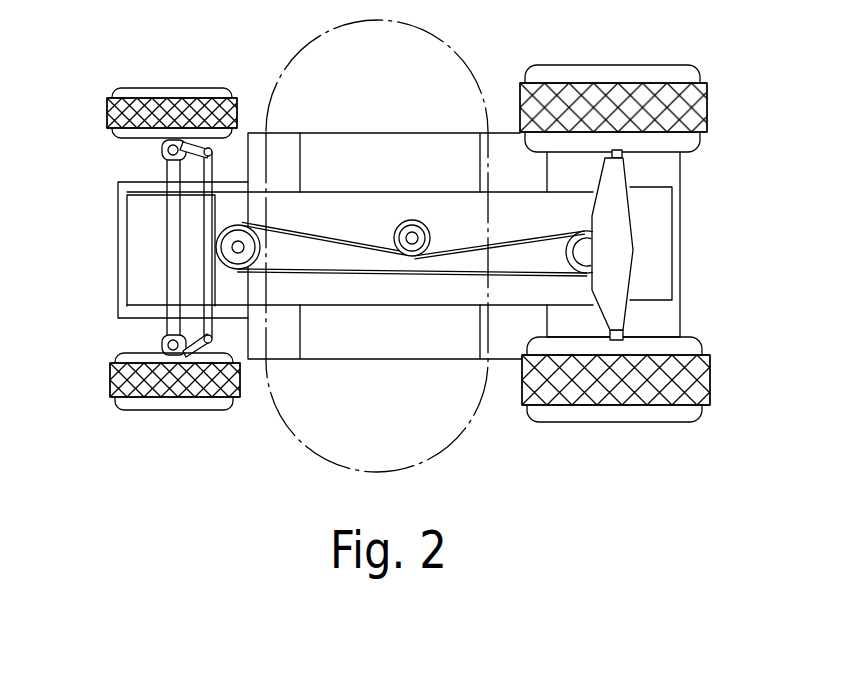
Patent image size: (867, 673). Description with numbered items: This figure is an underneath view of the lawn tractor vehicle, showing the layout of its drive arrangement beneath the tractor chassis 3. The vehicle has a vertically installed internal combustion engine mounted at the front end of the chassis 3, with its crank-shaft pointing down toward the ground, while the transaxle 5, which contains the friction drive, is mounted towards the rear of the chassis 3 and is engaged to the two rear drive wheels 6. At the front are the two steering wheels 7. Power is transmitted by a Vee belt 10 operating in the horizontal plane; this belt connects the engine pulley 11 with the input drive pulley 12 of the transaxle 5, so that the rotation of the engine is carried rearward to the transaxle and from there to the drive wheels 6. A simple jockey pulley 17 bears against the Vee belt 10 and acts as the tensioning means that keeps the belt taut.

The tractor chassis 3 is at (232, 213).
The transaxle 5 is at (615, 250).
The rear drive wheels 6 is at (551, 93).
The front steering wheels 7 is at (162, 100).
The Vee belt 10 is at (343, 275).
The engine pulley 11 is at (278, 233).
The motor pulley 12 is at (565, 232).
The jockey pulley 17 is at (411, 220).